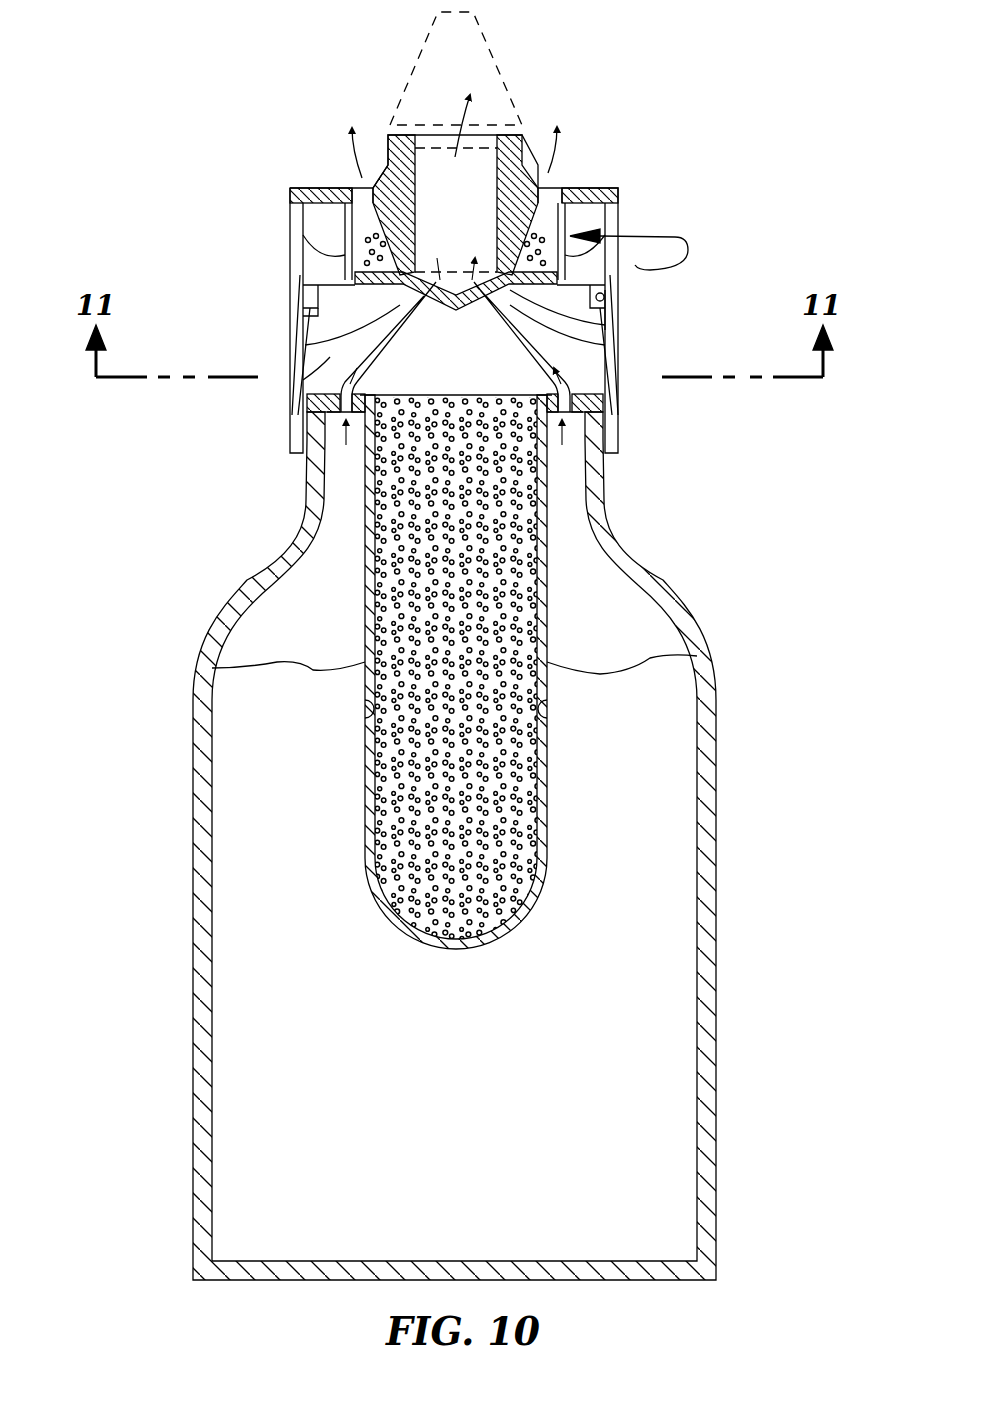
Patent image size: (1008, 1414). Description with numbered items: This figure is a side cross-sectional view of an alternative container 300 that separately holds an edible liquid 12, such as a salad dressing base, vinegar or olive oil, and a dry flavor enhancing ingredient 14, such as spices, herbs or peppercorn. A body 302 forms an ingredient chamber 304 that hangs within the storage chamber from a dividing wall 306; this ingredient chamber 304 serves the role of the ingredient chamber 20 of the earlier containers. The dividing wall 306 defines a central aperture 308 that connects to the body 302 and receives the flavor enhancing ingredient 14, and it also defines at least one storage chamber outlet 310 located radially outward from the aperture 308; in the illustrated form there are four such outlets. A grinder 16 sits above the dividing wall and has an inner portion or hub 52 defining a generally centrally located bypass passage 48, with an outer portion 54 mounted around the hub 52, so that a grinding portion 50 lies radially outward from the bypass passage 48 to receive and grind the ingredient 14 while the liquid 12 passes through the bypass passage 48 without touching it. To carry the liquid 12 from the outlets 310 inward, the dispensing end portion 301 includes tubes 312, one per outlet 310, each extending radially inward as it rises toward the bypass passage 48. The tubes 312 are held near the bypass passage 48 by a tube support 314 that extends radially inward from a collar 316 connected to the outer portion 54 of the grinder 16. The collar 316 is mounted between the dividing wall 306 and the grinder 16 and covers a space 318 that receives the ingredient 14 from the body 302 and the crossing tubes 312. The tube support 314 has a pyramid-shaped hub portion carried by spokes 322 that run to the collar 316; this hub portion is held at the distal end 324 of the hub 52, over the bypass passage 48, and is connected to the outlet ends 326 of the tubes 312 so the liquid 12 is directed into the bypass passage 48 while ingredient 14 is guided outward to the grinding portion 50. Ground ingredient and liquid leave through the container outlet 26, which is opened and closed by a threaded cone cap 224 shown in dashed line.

The edible liquid 12 is at (657, 652).
The flavor enhancing ingredient 14 is at (378, 758).
The grinder 16 is at (345, 232).
The ingredient chamber 20 is at (677, 830).
The container outlet 26 is at (430, 130).
The bypass passage 48 is at (470, 211).
The grinding portion 50 is at (350, 178).
The inner portion or hub 52 is at (396, 150).
The outer portion 54 is at (563, 230).
The threaded cone cap 224 is at (497, 70).
The container 300 is at (733, 545).
The dispensing end portion 301 is at (697, 119).
The body 302 is at (366, 720).
The ingredient chamber 304 is at (540, 720).
The dividing wall 306 is at (602, 400).
The central aperture 308 is at (362, 447).
The storage chamber outlet 310 is at (325, 417).
The tube 312 is at (398, 328).
The tube support 314 is at (560, 290).
The collar 316 is at (603, 317).
The space 318 is at (328, 353).
The spokes 322 is at (318, 300).
The distal end 324 is at (402, 267).
The outlet ends 326 is at (420, 285).